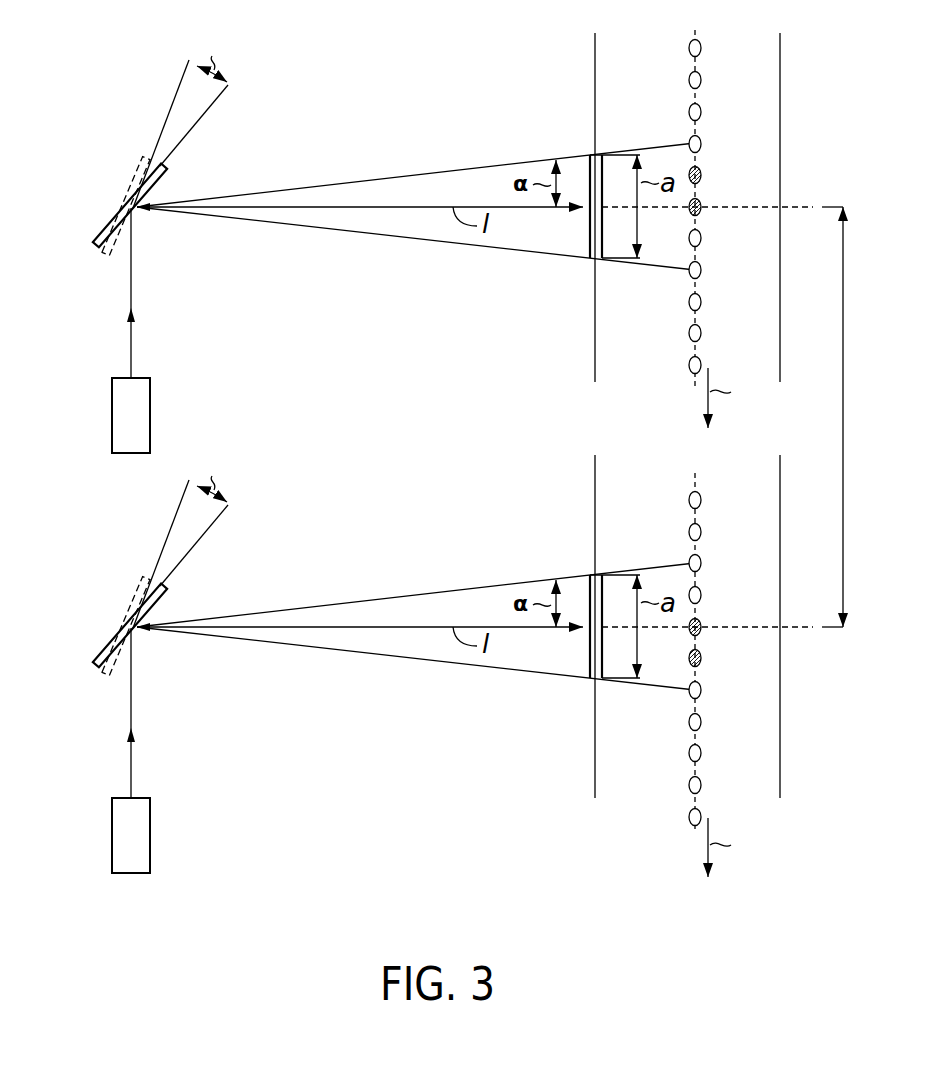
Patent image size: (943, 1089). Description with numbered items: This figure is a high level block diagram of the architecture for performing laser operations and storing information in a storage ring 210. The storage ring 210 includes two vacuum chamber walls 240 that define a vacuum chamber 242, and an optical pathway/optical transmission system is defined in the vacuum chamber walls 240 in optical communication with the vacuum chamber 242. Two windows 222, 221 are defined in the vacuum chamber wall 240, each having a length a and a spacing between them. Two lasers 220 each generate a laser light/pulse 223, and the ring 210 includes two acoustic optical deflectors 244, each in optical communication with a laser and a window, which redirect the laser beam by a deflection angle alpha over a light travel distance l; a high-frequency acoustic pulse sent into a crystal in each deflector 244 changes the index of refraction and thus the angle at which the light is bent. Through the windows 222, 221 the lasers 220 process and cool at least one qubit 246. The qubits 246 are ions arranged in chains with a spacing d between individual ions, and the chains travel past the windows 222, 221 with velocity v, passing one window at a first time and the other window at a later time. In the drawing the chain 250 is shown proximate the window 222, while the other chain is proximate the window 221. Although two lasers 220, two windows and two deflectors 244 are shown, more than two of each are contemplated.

The storage ring 210 is at (742, 62).
The laser 220 is at (112, 415).
The window 221 is at (589, 660).
The window 222 is at (589, 240).
The laser light/pulse 223 is at (129, 342).
The vacuum chamber wall 240 is at (687, 684).
The vacuum chamber 242 is at (648, 62).
The acoustic optical deflector 244 is at (107, 220).
The qubit 246 is at (637, 453).
The chain of ions 250 is at (720, 293).